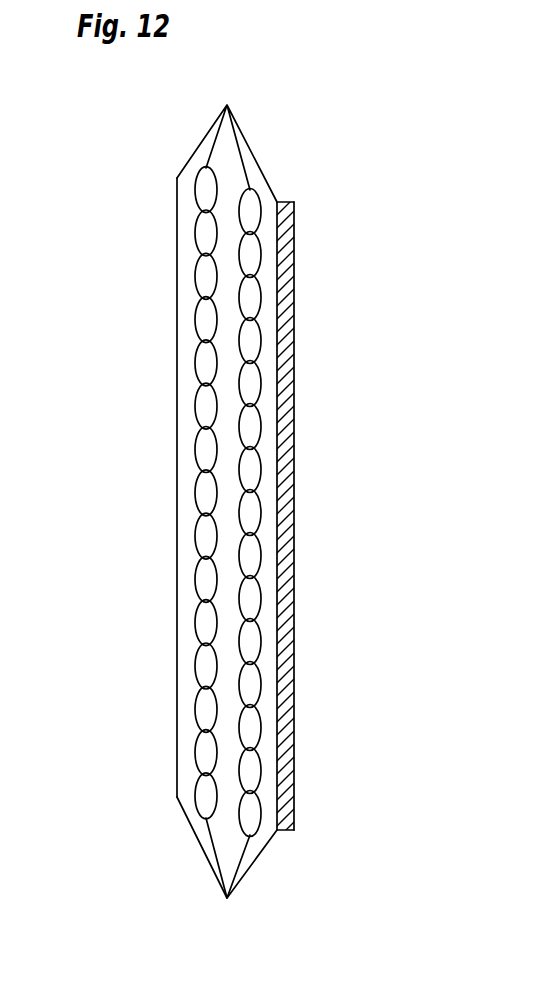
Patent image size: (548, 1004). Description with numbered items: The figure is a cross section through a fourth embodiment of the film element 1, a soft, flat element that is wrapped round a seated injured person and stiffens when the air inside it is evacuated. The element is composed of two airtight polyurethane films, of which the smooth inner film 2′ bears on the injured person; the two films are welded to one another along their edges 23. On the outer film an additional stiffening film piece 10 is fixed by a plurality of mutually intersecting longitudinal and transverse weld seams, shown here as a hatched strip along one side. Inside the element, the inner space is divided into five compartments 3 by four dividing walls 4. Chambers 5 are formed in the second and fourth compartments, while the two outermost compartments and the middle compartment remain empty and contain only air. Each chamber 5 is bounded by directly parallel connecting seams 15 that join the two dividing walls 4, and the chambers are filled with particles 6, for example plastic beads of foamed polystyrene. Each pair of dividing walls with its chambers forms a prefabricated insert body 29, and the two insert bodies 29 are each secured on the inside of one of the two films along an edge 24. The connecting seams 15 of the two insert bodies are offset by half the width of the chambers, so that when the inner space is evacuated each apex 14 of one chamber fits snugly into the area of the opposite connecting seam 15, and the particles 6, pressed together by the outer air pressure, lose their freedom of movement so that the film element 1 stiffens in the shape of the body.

The film element 1 is at (290, 148).
The inner film 2′ is at (177, 727).
The compartments 3 is at (267, 707).
The dividing walls 4 is at (240, 470).
The chambers 5 is at (198, 577).
The particles 6 is at (198, 278).
The stiffening film piece 10 is at (290, 278).
The apex 14 is at (218, 372).
The connecting seams 15 is at (202, 378).
The edges 23 is at (225, 898).
The edge 24 is at (215, 862).
The insert bodies 29 is at (218, 663).